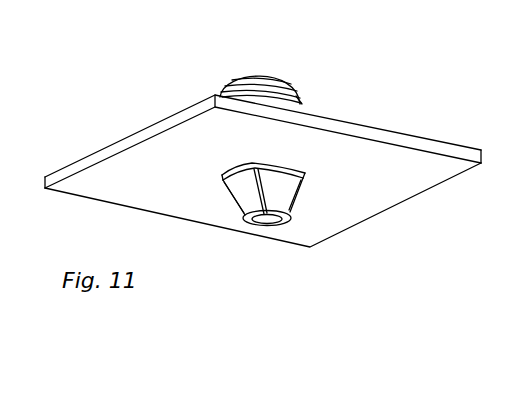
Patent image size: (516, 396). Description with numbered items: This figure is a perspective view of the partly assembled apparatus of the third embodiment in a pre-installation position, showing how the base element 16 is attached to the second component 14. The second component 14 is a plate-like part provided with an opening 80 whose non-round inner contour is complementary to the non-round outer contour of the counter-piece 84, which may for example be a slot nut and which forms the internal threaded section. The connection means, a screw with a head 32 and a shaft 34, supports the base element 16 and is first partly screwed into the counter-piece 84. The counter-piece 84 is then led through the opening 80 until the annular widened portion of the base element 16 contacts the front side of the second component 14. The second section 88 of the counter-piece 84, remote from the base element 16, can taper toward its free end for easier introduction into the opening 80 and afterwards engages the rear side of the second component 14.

The second component 14 is at (438, 135).
The base element 16 is at (305, 100).
The head 32 is at (257, 72).
The opening 80 is at (303, 175).
The counter-piece 84 is at (301, 204).
The second section 88 is at (237, 202).
The shaft 34 is at (267, 224).